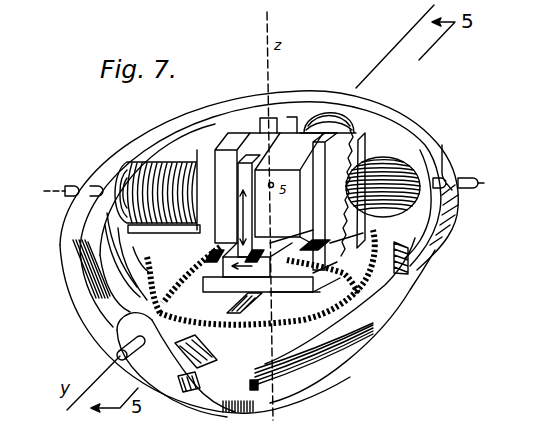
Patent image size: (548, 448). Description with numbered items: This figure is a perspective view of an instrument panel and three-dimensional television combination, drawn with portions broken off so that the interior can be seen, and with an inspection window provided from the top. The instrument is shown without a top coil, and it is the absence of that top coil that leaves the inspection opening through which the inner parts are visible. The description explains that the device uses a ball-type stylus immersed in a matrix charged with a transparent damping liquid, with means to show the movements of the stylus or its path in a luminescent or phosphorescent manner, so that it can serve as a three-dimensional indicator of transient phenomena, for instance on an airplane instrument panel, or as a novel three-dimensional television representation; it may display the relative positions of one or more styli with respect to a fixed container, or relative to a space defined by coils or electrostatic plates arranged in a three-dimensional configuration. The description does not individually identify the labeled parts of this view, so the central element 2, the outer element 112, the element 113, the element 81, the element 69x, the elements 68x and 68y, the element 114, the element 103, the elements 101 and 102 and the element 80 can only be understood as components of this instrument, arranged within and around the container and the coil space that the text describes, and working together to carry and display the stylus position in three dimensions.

The gyroscope block assembly 2 is at (273, 147).
The spherical housing 112 is at (192, 123).
The pivot bracket 113 is at (127, 340).
The band 81 is at (198, 244).
The coil 69x is at (221, 160).
The spring strip 68x is at (362, 150).
The spring strip 68y is at (346, 122).
The base plate 114 is at (268, 278).
The wedge block 103 is at (285, 273).
The flexure strip 101 is at (337, 262).
The flexure strip 102 is at (318, 266).
The ring segments 80 is at (300, 270).